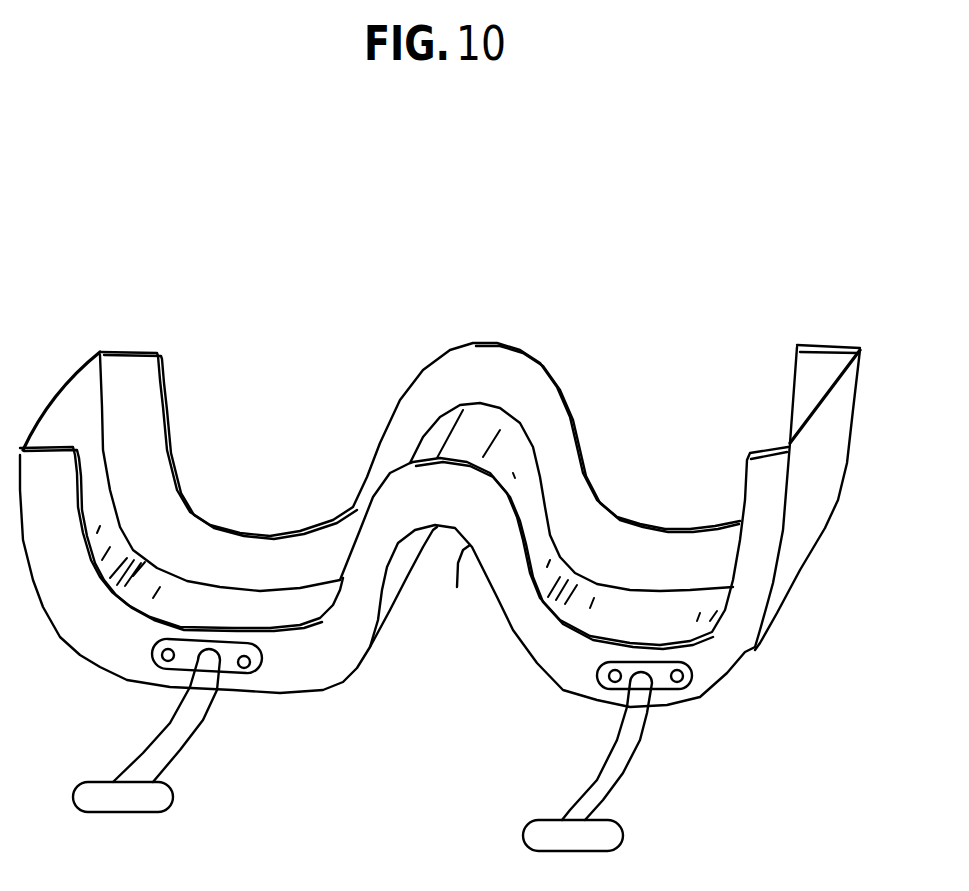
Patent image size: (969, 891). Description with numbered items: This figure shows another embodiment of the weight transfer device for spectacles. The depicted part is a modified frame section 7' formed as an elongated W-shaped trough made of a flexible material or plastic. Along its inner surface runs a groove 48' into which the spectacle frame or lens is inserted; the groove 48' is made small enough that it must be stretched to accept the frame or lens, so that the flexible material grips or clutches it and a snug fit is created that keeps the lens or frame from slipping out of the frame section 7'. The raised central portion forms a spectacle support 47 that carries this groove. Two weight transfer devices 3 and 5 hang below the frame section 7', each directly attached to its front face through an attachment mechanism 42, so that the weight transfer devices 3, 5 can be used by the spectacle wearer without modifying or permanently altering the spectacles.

The weight transfer device 3 is at (631, 761).
The weight transfer device 5 is at (194, 733).
The modified frame section 7' is at (440, 525).
The attachment mechanism 42 is at (245, 668).
The spectacle support 47 is at (438, 529).
The groove 48' is at (169, 520).